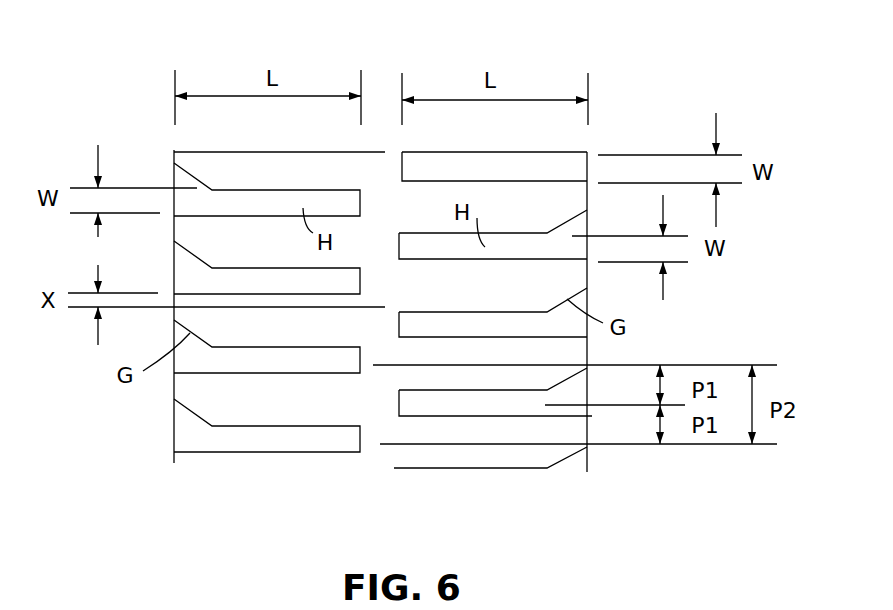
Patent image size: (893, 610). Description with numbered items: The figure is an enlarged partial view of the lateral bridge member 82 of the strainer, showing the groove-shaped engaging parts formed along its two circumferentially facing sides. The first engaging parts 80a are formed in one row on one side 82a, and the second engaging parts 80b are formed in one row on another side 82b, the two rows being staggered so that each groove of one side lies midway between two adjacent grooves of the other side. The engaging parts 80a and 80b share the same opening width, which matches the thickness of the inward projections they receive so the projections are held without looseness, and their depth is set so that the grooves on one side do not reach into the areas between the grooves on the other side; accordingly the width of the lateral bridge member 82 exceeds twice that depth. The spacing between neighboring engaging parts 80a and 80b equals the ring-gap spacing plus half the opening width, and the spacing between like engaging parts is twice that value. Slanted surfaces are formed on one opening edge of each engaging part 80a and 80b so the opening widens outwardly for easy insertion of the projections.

The first engaging parts 80a is at (543, 175).
The second engaging parts 80b is at (231, 202).
The lateral bridge member 82 is at (383, 151).
The one side of the lateral bridge member 82a is at (644, 329).
The another side of the lateral bridge member 82b is at (172, 446).